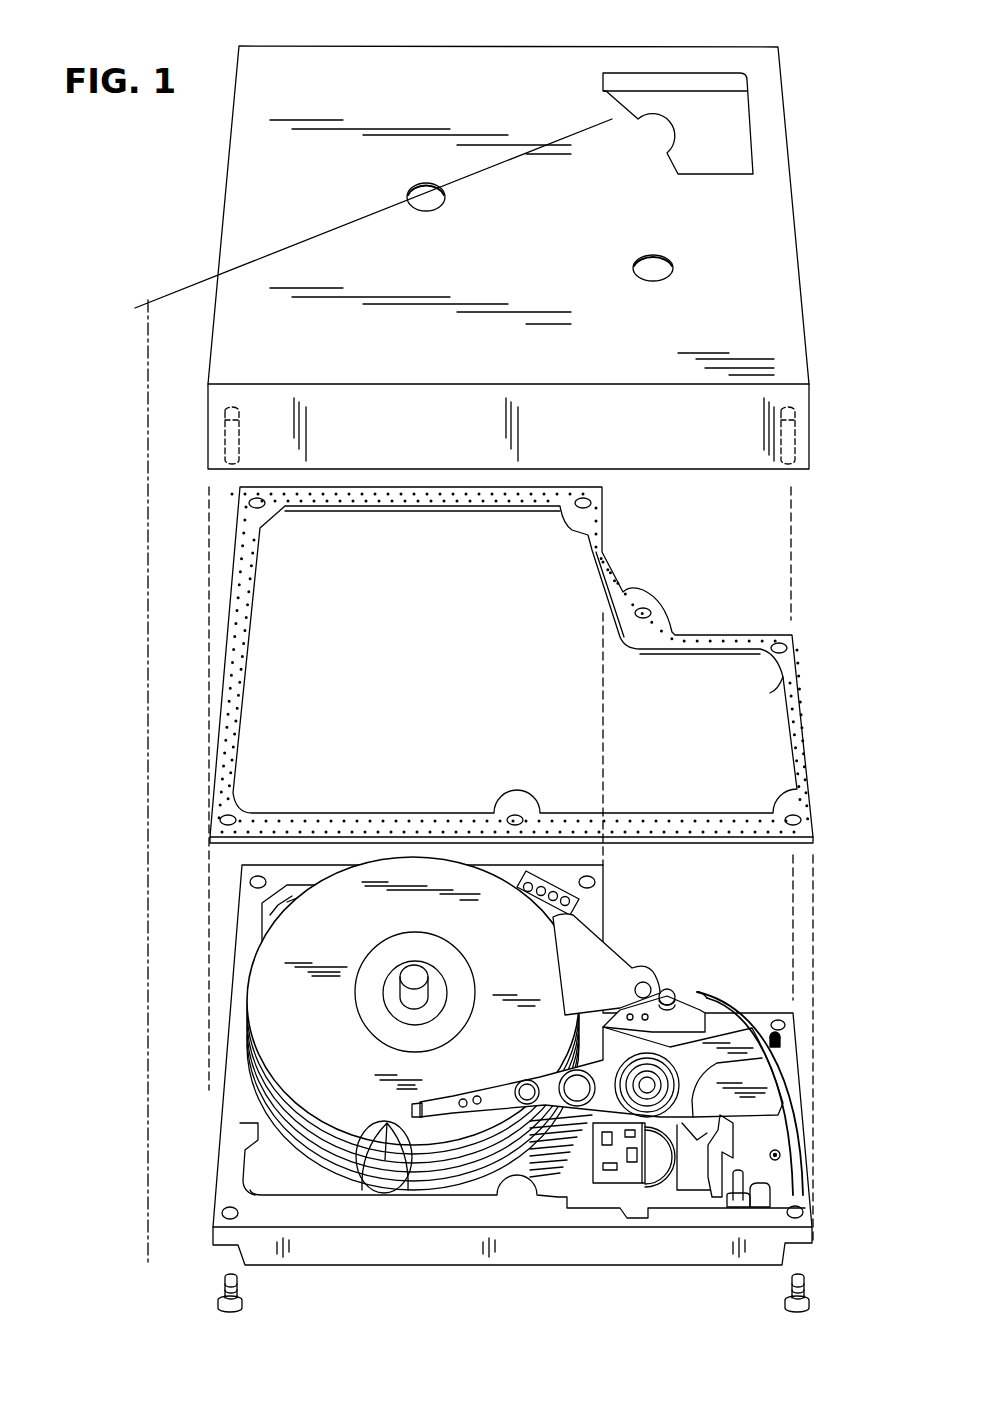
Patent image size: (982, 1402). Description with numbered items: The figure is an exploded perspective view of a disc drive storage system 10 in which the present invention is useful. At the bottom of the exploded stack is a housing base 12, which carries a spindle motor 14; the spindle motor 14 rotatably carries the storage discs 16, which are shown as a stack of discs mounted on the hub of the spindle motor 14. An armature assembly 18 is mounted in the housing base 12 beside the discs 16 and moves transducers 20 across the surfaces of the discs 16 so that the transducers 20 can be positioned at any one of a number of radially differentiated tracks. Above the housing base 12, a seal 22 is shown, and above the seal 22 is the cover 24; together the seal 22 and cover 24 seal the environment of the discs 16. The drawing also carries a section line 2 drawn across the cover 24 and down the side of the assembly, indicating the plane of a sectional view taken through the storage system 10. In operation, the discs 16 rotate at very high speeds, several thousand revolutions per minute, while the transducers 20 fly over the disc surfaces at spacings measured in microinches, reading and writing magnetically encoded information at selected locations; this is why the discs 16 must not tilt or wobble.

The storage system 10 is at (789, 46).
The section line 2- 2 is at (593, 130).
The cover 24 is at (796, 245).
The seal 22 is at (797, 795).
The housing base 12 is at (812, 1221).
The spindle motor 14 is at (392, 1007).
The storage discs 16 is at (579, 1054).
The transducers 20 is at (421, 1102).
The armature assembly 18 is at (555, 1192).